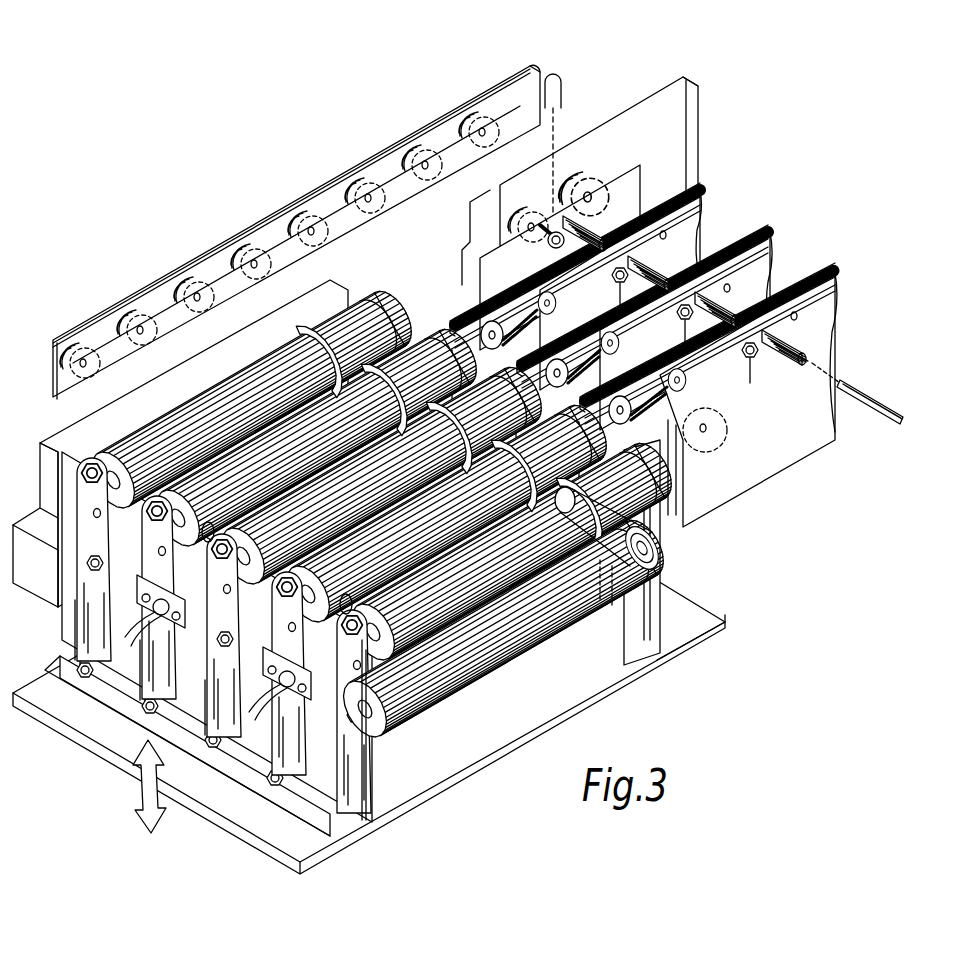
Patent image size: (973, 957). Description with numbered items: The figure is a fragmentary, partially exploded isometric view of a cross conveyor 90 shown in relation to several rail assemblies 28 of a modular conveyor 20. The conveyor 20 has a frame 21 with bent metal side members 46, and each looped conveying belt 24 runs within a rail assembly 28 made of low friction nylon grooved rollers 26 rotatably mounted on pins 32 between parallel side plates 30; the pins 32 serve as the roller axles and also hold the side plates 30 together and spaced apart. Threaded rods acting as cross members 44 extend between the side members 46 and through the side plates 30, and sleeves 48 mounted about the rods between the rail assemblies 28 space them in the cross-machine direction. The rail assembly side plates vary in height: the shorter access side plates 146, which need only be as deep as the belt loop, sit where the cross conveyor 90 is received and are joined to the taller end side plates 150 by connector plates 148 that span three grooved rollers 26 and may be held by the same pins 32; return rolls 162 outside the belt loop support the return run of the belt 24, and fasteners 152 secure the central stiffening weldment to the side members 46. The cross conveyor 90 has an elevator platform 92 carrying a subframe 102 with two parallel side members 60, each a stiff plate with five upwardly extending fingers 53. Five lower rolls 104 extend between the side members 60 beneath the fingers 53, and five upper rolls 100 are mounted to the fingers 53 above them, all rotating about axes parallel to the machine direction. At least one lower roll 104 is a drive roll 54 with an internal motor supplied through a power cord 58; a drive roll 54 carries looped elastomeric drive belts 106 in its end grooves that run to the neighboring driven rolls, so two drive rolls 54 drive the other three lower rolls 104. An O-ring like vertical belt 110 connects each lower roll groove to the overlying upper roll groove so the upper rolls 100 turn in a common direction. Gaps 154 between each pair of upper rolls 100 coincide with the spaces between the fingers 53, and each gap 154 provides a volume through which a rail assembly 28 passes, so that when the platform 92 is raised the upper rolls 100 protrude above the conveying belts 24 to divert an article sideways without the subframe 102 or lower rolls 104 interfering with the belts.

The modular conveyor 20 is at (203, 236).
The frame 21 is at (700, 162).
The conveying belt 24 is at (454, 324).
The grooved roller 26 is at (590, 180).
The rail assembly 28 is at (702, 209).
The side plate 30 is at (770, 243).
The pin 32 is at (794, 317).
The threaded rod 44 is at (898, 404).
The side member 46 is at (58, 476).
The sleeve 48 is at (579, 230).
The finger 53 is at (398, 334).
The drive roll 54 is at (214, 630).
The power cord 58 is at (254, 701).
The side member 60 is at (375, 791).
The cross conveyor 90 is at (628, 702).
The elevator platform 92 is at (690, 649).
The upper roll 100 is at (250, 402).
The cross conveyor subframe 102 is at (376, 754).
The lower roll 104 is at (510, 637).
The drive belt 106 is at (640, 566).
The vertical belt 110 is at (549, 621).
The access side plate 146 is at (334, 180).
The connector plate 148 is at (446, 118).
The end side plate 150 is at (836, 358).
The fastener 152 is at (545, 237).
The gap 154 is at (102, 564).
The return roll 162 is at (565, 95).